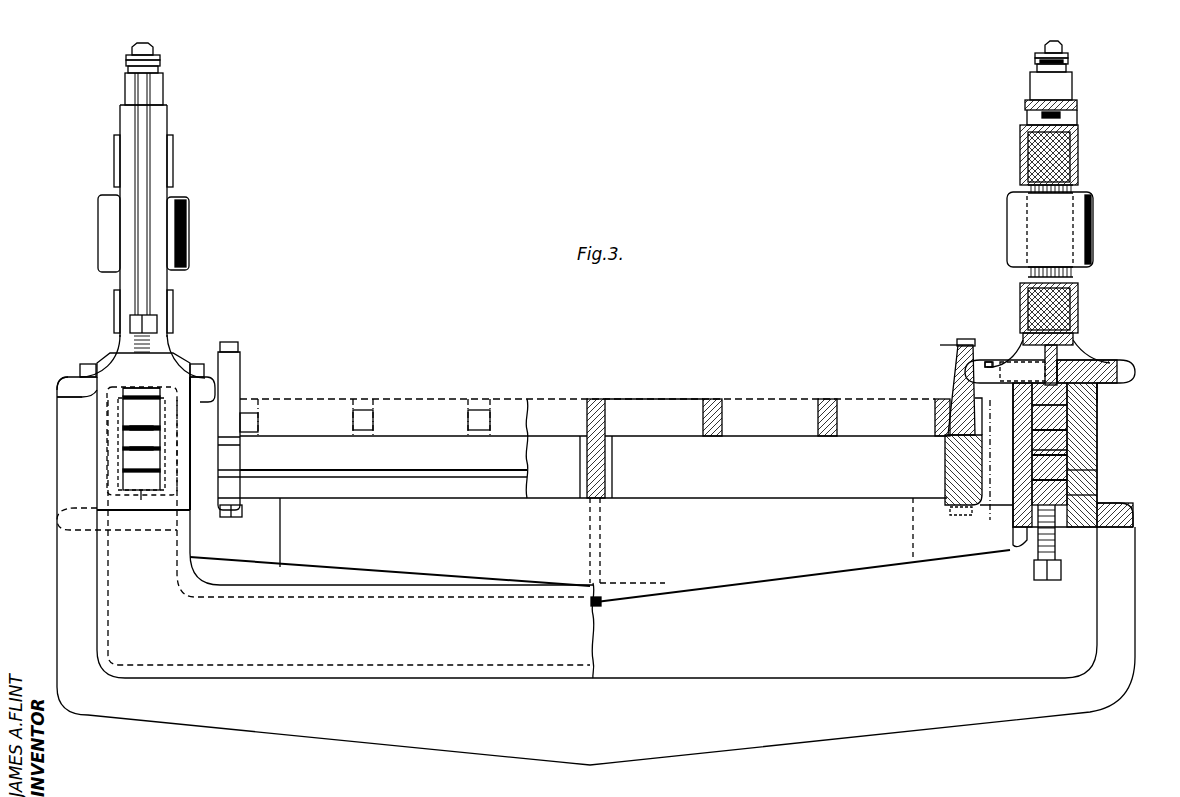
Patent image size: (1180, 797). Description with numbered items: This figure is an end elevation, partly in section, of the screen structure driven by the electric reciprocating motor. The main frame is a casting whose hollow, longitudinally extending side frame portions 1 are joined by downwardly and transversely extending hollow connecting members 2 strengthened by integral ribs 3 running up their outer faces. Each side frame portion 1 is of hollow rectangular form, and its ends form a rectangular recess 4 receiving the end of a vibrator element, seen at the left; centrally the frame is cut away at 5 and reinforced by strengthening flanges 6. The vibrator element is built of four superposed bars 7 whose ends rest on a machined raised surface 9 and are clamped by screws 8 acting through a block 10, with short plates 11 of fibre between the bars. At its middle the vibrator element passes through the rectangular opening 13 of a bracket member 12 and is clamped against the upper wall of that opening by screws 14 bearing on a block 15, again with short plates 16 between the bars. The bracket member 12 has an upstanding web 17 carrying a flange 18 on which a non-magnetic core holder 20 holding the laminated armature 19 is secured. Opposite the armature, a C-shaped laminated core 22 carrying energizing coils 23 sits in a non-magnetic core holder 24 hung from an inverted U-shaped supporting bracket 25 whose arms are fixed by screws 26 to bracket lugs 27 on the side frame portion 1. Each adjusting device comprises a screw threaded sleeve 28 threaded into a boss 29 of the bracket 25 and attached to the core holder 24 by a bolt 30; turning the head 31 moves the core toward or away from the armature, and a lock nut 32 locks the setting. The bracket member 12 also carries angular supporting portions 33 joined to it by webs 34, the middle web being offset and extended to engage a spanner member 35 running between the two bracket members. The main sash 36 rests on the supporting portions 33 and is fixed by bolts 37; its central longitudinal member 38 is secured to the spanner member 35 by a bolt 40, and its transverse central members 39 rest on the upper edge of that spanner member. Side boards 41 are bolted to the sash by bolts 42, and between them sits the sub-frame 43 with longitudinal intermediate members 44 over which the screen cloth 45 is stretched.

The side frame portion 1 is at (97, 482).
The connecting member 2 is at (285, 640).
The rib 3 is at (115, 700).
The rectangular recess 4 is at (122, 460).
The cut-away portion 5 is at (1088, 364).
The strengthening flange 6 is at (65, 372).
The bar 7 is at (127, 445).
The screw 8 is at (150, 322).
The raised surface 9 is at (140, 490).
The block 10 is at (125, 405).
The short plate 11 is at (150, 465).
The bracket member 12 is at (1100, 402).
The rectangular opening 13 is at (1030, 455).
The screw 14 is at (1052, 568).
The block 15 is at (1095, 497).
The short plate 16 is at (1100, 478).
The web 17 is at (1057, 360).
The flange 18 is at (1075, 342).
The armature 19 is at (1068, 304).
The core holder 20 is at (114, 304).
The laminated core 22 is at (1078, 160).
The energizing coil 23 is at (107, 218).
The core holder 24 is at (114, 155).
The supporting bracket 25 is at (162, 130).
The screw 26 is at (87, 362).
The bracket lug 27 is at (87, 388).
The screw threaded sleeve 28 is at (158, 62).
The boss 29 is at (127, 95).
The bolt 30 is at (140, 44).
The head 31 is at (126, 58).
The lock nut 32 is at (160, 70).
The supporting portion 33 is at (206, 520).
The web 34 is at (267, 550).
The spanner member 35 is at (352, 565).
The main sash 36 is at (290, 443).
The bolt 37 is at (235, 512).
The central longitudinal member 38 is at (610, 475).
The transverse central member 39 is at (548, 478).
The bolt 40 is at (602, 594).
The side board 41 is at (230, 380).
The bolt 42 is at (233, 345).
The sub-frame 43 is at (415, 415).
The intermediate member 44 is at (722, 400).
The screen cloth 45 is at (625, 400).